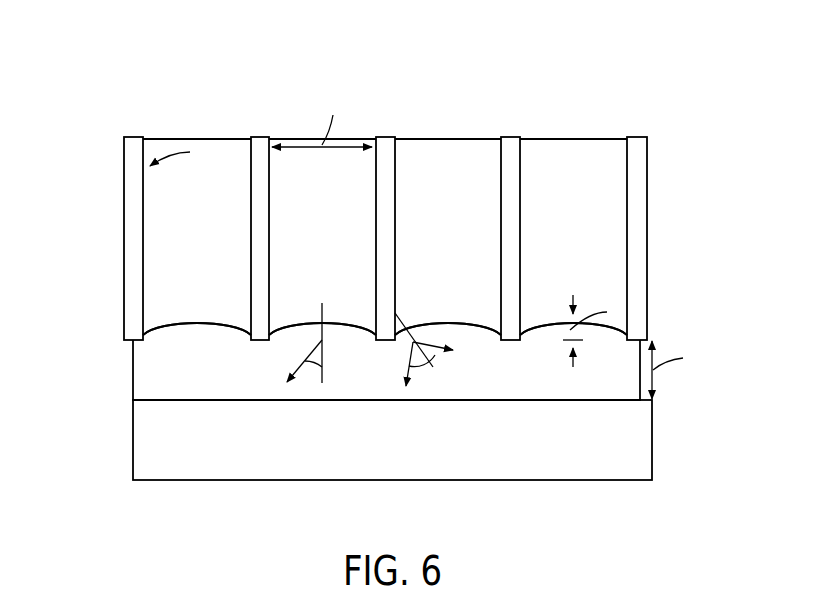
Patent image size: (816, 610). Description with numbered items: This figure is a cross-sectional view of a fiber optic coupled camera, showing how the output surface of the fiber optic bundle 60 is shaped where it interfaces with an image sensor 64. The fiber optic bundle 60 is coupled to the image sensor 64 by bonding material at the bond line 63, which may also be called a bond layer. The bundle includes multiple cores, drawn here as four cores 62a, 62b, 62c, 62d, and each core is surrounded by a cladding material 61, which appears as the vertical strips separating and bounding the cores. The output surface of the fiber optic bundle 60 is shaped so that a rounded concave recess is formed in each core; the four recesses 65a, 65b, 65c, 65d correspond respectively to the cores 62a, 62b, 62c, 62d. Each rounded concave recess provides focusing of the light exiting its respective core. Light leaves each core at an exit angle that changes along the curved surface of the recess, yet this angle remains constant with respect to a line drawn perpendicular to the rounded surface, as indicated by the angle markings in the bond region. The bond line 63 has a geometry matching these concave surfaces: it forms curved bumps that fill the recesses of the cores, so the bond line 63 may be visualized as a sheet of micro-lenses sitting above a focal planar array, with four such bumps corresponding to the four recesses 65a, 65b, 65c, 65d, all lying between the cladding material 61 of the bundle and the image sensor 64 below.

The fiber optic bundle 60 is at (695, 75).
The cladding material 61 is at (259, 142).
The core 62a is at (570, 152).
The core 62b is at (443, 152).
The core 62c is at (347, 165).
The core 62d is at (182, 147).
The bond line 63 is at (146, 386).
The image sensor 64 is at (124, 443).
The rounded concave recess 65a is at (602, 325).
The rounded concave recess 65b is at (472, 325).
The rounded concave recess 65c is at (340, 327).
The rounded concave recess 65d is at (220, 323).